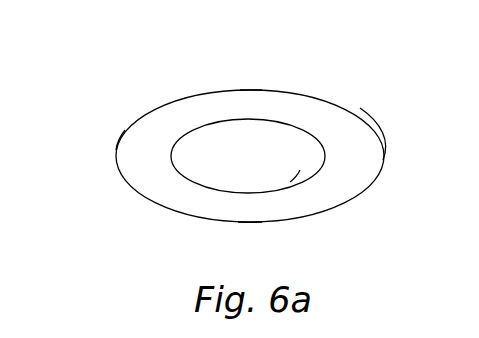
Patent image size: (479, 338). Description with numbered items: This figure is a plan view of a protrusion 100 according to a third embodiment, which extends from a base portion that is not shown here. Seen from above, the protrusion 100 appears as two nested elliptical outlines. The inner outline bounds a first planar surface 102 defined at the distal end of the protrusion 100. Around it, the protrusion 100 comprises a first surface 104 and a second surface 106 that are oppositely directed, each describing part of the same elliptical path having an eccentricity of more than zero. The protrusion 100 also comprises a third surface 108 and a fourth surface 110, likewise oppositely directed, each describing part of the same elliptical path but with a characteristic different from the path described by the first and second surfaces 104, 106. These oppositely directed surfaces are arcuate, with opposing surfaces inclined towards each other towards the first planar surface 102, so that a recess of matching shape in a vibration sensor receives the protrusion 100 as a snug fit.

The protrusion 100 is at (317, 73).
The first planar surface 102 is at (302, 172).
The first oppositely directed surface 104 is at (248, 210).
The second oppositely directed surface 106 is at (253, 107).
The third oppositely directed surface 108 is at (125, 150).
The fourth oppositely directed surface 110 is at (345, 125).